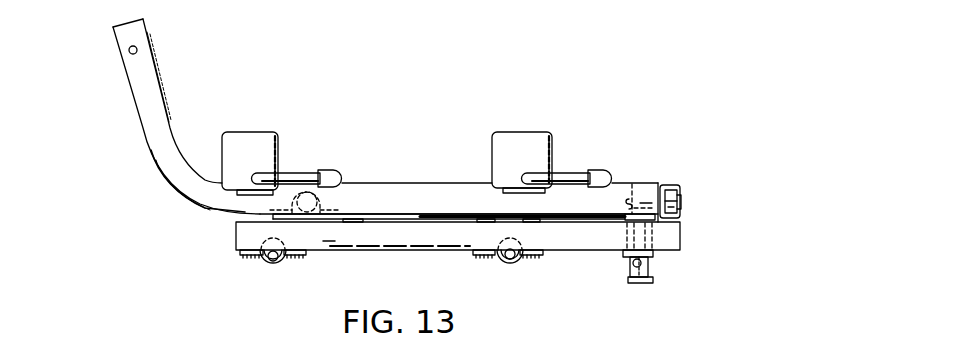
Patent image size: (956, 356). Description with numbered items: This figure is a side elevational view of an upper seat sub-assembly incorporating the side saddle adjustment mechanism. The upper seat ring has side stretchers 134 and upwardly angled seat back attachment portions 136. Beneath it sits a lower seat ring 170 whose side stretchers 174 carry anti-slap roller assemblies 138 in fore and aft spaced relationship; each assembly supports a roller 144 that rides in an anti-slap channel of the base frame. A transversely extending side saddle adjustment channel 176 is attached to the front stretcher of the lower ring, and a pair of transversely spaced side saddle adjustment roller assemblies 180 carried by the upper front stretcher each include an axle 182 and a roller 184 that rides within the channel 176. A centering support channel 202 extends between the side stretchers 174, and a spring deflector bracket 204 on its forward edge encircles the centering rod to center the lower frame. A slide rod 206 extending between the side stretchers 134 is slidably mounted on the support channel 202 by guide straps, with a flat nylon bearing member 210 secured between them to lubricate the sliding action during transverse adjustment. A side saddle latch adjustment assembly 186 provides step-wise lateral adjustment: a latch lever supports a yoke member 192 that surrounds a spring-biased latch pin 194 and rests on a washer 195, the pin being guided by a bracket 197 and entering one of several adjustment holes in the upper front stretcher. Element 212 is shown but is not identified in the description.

The side stretchers 134 is at (435, 187).
The seat back attachment portions 136 is at (150, 88).
The anti-slap roller assemblies 138 is at (250, 266).
The roller 144 is at (273, 269).
The lower seat ring 170 is at (680, 250).
The side stretchers 174 is at (396, 234).
The side saddle adjustment channel 176 is at (681, 199).
The side saddle adjustment roller assemblies 180 is at (657, 178).
The axle 182 is at (670, 188).
The roller 184 is at (681, 212).
The side saddle latch adjustment assembly 186 is at (672, 299).
The yoke member 192 is at (632, 266).
The latch pin 194 is at (640, 286).
The washer 195 is at (658, 273).
The bracket 197 is at (622, 253).
The centering support channel 202 is at (340, 215).
The spring deflector bracket 204 is at (363, 217).
The slide rod 206 is at (310, 196).
The nylon bearing member 210 is at (293, 218).
The (off-sheet element) 212 is at (467, 353).